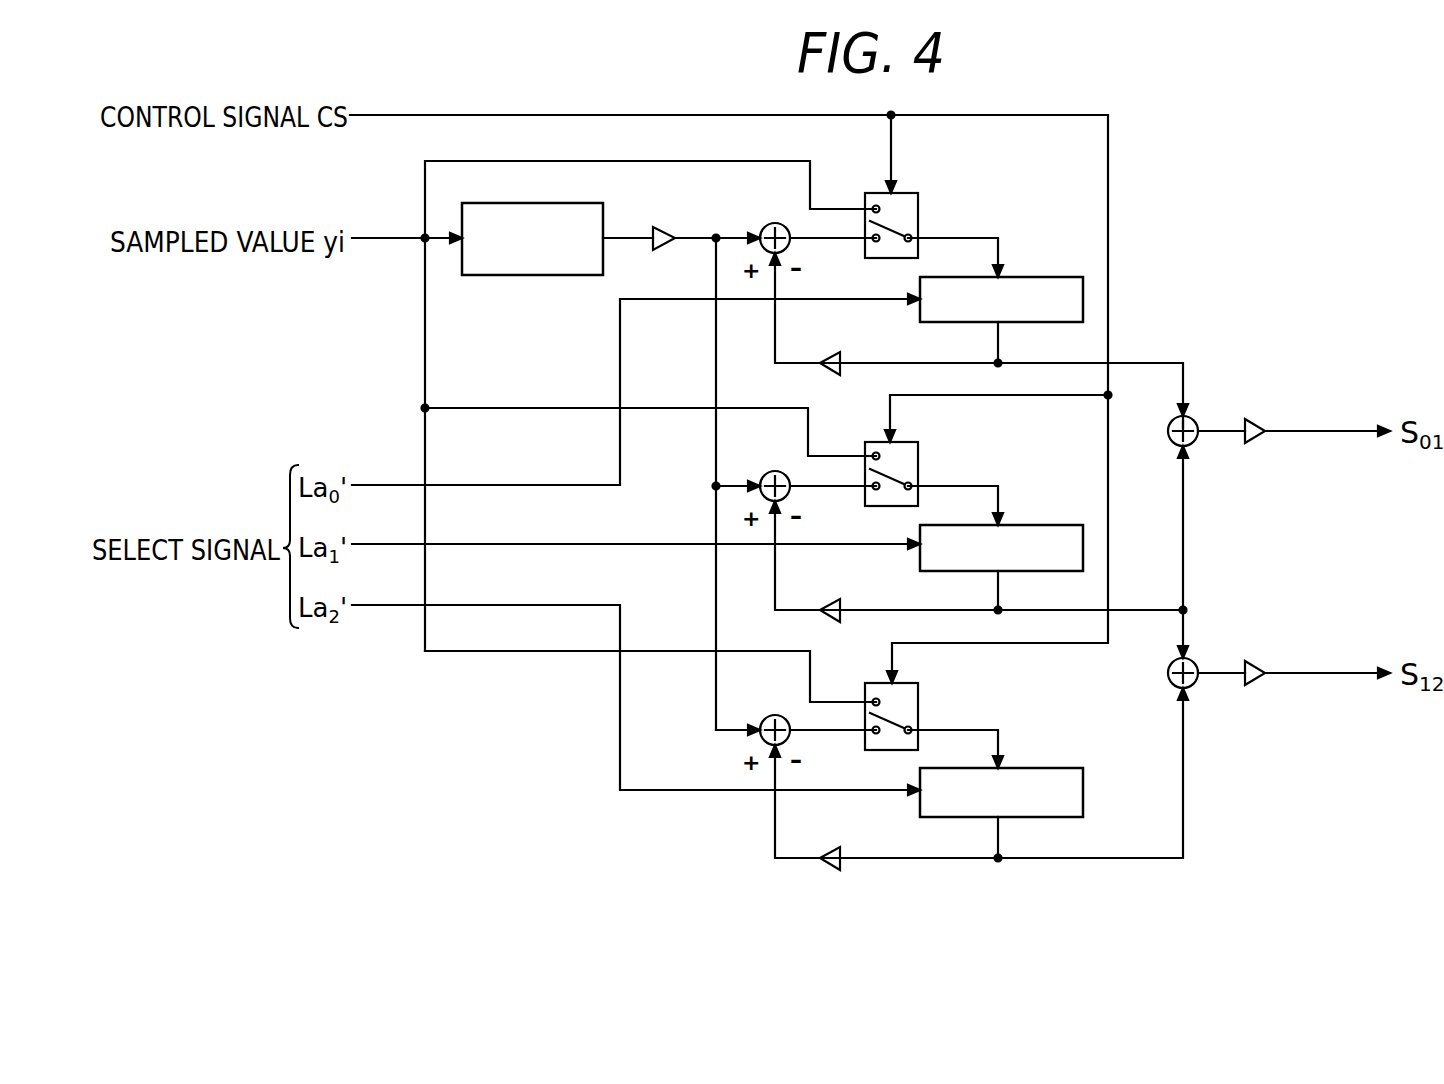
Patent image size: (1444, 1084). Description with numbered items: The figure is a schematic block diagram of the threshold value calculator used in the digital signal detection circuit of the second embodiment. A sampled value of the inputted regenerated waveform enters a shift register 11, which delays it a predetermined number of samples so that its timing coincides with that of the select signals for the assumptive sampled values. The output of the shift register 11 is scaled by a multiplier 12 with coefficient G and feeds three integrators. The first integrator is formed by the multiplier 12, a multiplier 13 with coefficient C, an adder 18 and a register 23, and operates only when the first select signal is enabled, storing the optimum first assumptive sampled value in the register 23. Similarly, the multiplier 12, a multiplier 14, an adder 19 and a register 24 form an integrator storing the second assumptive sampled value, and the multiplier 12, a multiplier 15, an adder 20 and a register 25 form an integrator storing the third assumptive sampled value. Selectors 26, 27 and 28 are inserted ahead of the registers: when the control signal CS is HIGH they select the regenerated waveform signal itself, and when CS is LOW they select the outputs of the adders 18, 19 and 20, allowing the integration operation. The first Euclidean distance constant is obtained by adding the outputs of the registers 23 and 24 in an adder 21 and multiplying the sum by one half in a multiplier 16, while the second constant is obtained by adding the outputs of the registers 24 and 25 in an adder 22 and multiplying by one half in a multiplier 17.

The shift register 11 is at (488, 275).
The multiplier 12 is at (668, 228).
The multiplier 13 is at (838, 352).
The multiplier 14 is at (838, 599).
The multiplier 15 is at (838, 847).
The multiplier 16 is at (1255, 418).
The multiplier 17 is at (1255, 660).
The adder 18 is at (775, 223).
The adder 19 is at (768, 472).
The adder 20 is at (768, 716).
The adder 21 is at (1195, 420).
The adder 22 is at (1195, 662).
The register 23 is at (1045, 277).
The register 24 is at (1048, 525).
The register 25 is at (1055, 768).
The selector 26 is at (912, 193).
The selector 27 is at (912, 442).
The selector 28 is at (918, 690).